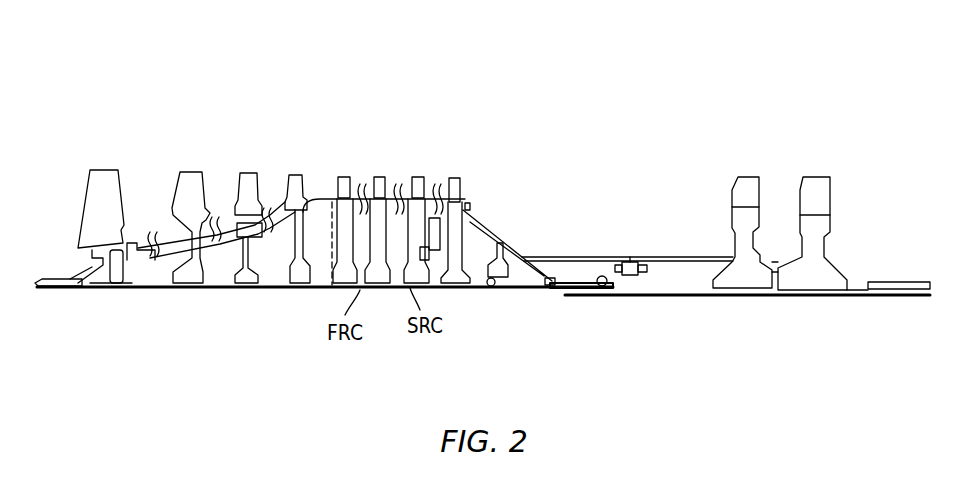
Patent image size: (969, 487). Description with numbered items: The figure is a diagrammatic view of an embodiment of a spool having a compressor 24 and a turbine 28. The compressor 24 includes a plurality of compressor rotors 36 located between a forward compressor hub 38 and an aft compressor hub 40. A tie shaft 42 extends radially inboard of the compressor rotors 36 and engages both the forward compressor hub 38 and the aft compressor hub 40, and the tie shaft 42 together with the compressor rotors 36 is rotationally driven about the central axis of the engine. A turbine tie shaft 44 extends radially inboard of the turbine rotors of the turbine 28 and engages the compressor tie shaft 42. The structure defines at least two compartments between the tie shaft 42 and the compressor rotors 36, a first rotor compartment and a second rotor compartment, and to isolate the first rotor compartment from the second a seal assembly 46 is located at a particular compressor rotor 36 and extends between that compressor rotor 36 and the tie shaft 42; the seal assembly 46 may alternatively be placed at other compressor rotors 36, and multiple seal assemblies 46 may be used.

The compressor 24 is at (78, 103).
The compressor rotors 36 is at (118, 170).
The turbine 28 is at (708, 152).
The forward compressor hub 38 is at (58, 289).
The tie shaft 42 is at (213, 289).
The aft compressor hub 40 is at (587, 292).
The turbine tie shaft 44 is at (692, 298).
The seal assembly 46 is at (379, 292).